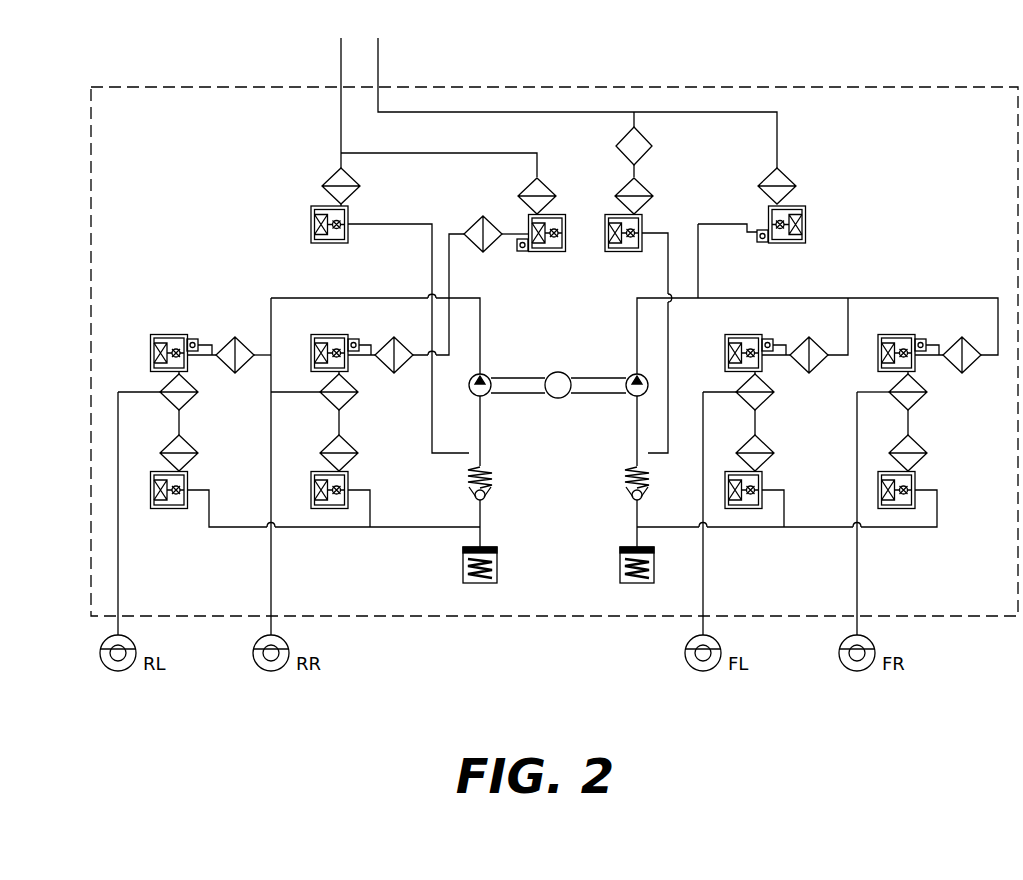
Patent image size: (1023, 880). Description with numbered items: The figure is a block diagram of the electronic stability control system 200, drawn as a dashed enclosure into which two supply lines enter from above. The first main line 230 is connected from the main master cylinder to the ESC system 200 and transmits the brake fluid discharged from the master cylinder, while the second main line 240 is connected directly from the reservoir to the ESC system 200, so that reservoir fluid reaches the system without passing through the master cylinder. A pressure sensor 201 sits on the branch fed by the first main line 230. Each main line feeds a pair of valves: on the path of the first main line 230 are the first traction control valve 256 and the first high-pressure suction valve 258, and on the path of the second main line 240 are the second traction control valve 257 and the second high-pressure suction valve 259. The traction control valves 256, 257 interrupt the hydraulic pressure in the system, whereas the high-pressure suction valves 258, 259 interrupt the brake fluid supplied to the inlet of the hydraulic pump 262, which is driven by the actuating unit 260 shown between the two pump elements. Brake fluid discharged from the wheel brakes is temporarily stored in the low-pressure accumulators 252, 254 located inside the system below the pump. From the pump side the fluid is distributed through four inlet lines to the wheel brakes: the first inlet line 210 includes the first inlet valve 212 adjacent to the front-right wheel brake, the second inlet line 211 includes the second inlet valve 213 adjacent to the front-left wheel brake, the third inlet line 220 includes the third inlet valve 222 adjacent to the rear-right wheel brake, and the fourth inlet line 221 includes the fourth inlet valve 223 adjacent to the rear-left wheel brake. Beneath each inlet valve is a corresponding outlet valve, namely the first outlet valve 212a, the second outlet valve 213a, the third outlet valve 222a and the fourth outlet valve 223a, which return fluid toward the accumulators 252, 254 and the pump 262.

The ESC system 200 is at (125, 87).
The second main line 240 is at (341, 70).
The first main line 230 is at (378, 70).
The pressure sensor 201 is at (652, 140).
The second high-pressure suction valve 259 is at (311, 222).
The second traction control valve 257 is at (528, 224).
The first high-pressure suction valve 258 is at (642, 224).
The first traction control valve 256 is at (806, 215).
The fourth inlet valve 223 is at (170, 335).
The fourth outlet valve 223a is at (187, 480).
The third inlet valve 222 is at (311, 365).
The third outlet valve 222a is at (348, 480).
The second inlet valve 213 is at (762, 365).
The second outlet valve 213a is at (762, 480).
The first inlet valve 212 is at (915, 365).
The first outlet valve 212a is at (915, 480).
The actuating unit 260 is at (558, 372).
The hydraulic pump 262 is at (634, 396).
The accumulator 254 is at (463, 566).
The accumulator 252 is at (620, 566).
The fourth inlet line 221 is at (118, 601).
The third inlet line 220 is at (271, 601).
The second inlet line 211 is at (703, 601).
The first inlet line 210 is at (857, 601).